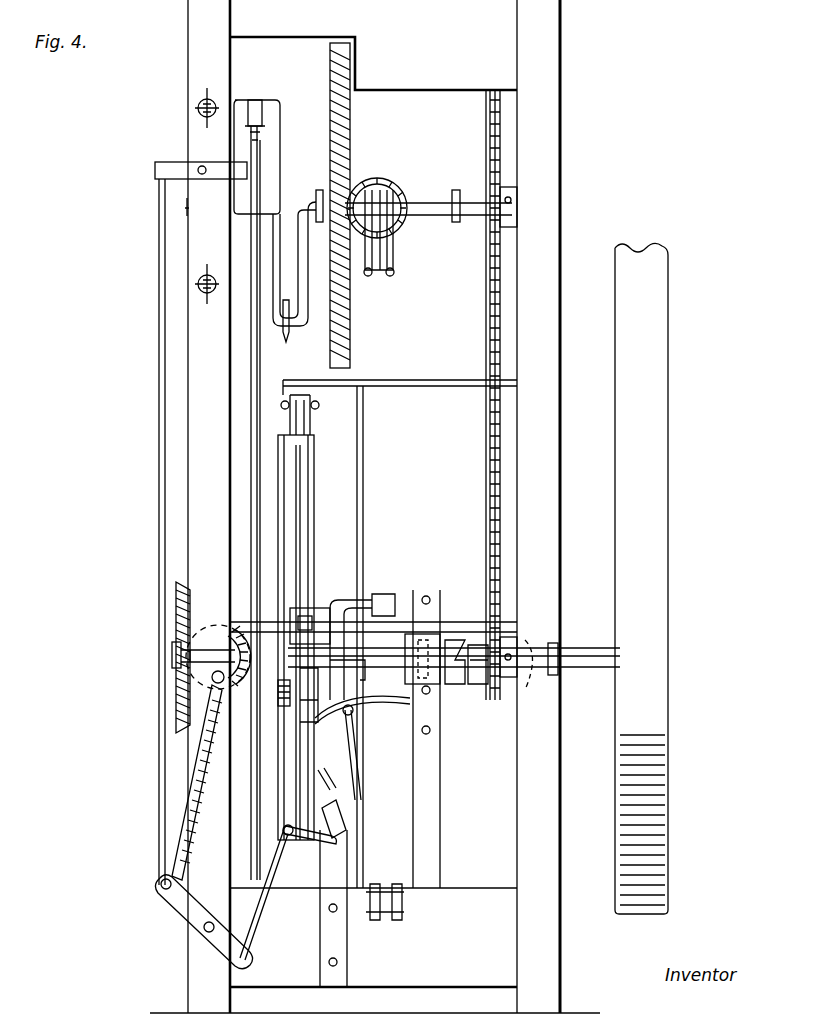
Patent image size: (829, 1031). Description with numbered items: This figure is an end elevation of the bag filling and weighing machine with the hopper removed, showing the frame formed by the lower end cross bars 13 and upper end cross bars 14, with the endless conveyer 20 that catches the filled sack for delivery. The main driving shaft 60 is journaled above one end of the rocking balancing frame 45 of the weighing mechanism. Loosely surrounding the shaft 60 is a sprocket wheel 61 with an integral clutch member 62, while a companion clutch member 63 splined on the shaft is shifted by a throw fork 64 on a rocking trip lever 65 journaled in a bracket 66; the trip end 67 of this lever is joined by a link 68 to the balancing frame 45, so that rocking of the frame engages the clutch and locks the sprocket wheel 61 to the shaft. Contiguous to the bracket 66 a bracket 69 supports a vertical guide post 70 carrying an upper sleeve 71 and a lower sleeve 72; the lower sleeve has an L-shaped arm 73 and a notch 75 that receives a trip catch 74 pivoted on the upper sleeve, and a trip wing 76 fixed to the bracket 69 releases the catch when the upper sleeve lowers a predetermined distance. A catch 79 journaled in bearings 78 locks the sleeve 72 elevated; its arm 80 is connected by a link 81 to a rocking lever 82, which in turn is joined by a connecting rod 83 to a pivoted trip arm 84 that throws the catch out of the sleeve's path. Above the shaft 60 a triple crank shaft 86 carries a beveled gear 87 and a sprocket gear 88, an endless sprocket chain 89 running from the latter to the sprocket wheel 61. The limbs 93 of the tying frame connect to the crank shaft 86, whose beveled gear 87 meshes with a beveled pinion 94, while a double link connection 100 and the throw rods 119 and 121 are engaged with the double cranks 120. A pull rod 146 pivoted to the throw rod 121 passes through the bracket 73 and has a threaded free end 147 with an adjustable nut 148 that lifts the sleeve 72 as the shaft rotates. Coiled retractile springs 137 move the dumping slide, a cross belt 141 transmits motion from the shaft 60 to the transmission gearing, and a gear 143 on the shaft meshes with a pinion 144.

The lower end cross bar 13 is at (502, 940).
The upper end cross bar 14 is at (508, 40).
The endless conveyer 20 is at (393, 622).
The rocking balancing frame 45 is at (408, 908).
The main driving shaft 60 is at (583, 667).
The sprocket wheel 61 is at (500, 623).
The clutch member 62 is at (480, 675).
The companion clutch member 63 is at (454, 686).
The throw fork 64 is at (446, 632).
The rocking trip lever 65 is at (388, 704).
The bracket 66 is at (440, 770).
The trip end 67 is at (302, 728).
The link 68 is at (352, 752).
The bracket 69 is at (408, 380).
The vertical guide post 70 is at (312, 424).
The upper sleeve 71 is at (306, 462).
The lower sleeve 72 is at (288, 780).
The L-shaped arm 73 is at (278, 712).
The trip catch 74 is at (340, 600).
The notch 75 is at (322, 770).
The trip wing 76 is at (366, 668).
The bearings 78 is at (322, 949).
The catch 79 is at (340, 818).
The arm 80 is at (284, 838).
The link 81 is at (258, 910).
The rocking lever 82 is at (182, 905).
The connecting rod 83 is at (158, 293).
The trip arm 84 is at (177, 162).
The triple crank shaft 86 is at (476, 213).
The beveled gear 87 is at (353, 108).
The sprocket gear 88 is at (500, 130).
The endless sprocket chain 89 is at (490, 321).
The limbs 93 is at (317, 191).
The beveled pinion 94 is at (384, 186).
The double link connection 100 is at (386, 256).
The throw rod 119 is at (288, 333).
The double cranks 120 is at (302, 294).
The throw rod 121 is at (258, 99).
The coiled retractile springs 137 is at (198, 100).
The cross belt 141 is at (660, 403).
The gear 143 is at (176, 598).
The pinion 144 is at (232, 650).
The pull rod 146 is at (256, 393).
The threaded free end 147 is at (240, 704).
The nut 148 is at (232, 660).